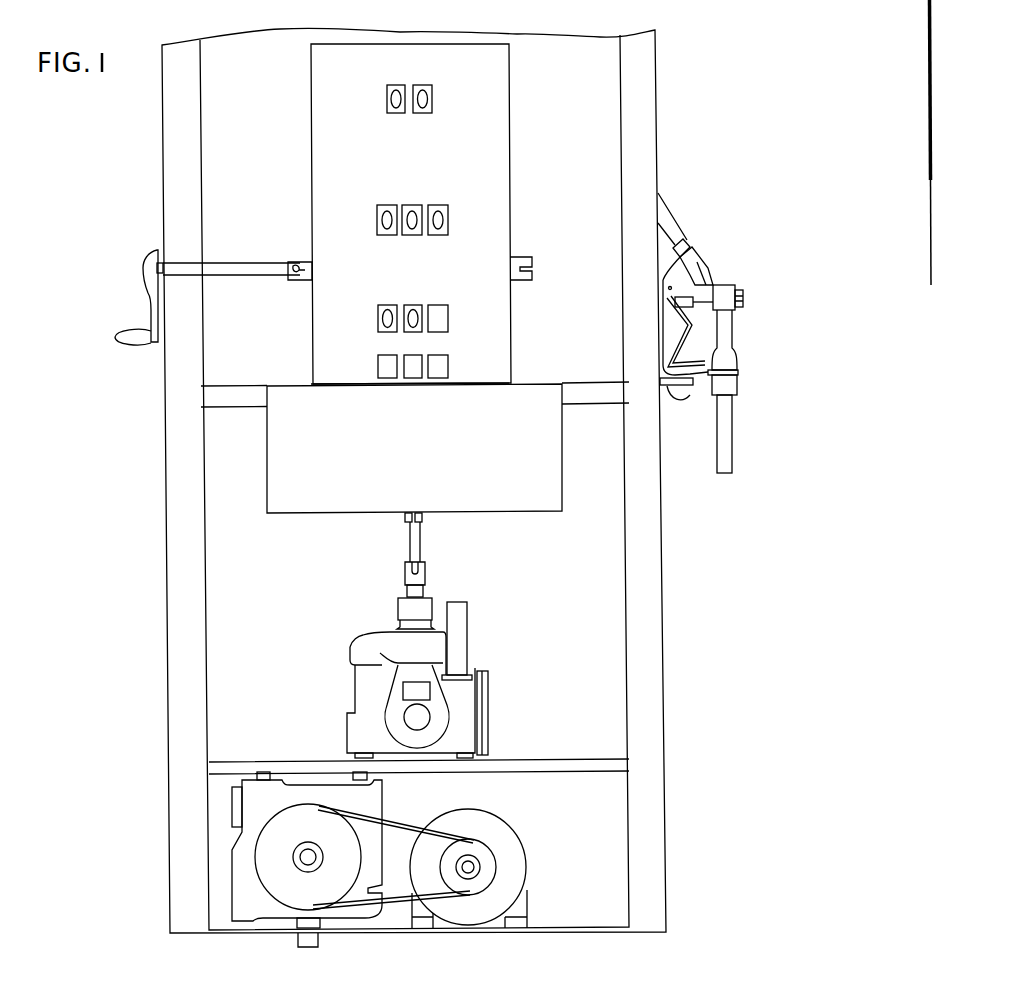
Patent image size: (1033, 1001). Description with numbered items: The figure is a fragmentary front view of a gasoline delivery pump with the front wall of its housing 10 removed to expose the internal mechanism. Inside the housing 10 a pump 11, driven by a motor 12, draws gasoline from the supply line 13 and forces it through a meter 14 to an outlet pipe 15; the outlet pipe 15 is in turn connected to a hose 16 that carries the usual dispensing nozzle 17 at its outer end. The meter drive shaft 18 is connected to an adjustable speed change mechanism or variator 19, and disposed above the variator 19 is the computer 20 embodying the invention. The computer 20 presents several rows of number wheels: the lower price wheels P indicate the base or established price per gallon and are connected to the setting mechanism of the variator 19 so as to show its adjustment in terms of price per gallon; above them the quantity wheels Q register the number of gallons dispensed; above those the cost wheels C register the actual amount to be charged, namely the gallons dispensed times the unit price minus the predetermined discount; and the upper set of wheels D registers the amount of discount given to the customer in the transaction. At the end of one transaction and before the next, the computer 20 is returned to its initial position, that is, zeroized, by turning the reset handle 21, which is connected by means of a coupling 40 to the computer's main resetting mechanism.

The housing 10 is at (664, 633).
The pump 11 is at (254, 913).
The motor 12 is at (505, 829).
The supply line 13 is at (303, 944).
The meter 14 is at (488, 697).
The outlet pipe 15 is at (464, 613).
The hose 16 is at (732, 435).
The dispensing nozzle 17 is at (696, 258).
The meter drive shaft 18 is at (418, 546).
The variator 19 is at (525, 392).
The computer 20 is at (433, 214).
The reset handle 21 is at (146, 302).
The coupling 40 is at (297, 262).
The discount number wheels D is at (444, 100).
The cost number wheels C is at (458, 222).
The quantity number wheels Q is at (456, 322).
The price number wheels P is at (456, 369).